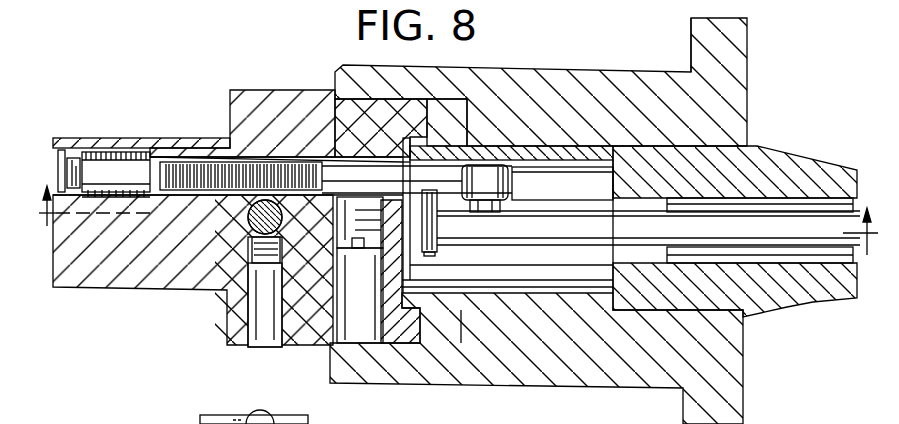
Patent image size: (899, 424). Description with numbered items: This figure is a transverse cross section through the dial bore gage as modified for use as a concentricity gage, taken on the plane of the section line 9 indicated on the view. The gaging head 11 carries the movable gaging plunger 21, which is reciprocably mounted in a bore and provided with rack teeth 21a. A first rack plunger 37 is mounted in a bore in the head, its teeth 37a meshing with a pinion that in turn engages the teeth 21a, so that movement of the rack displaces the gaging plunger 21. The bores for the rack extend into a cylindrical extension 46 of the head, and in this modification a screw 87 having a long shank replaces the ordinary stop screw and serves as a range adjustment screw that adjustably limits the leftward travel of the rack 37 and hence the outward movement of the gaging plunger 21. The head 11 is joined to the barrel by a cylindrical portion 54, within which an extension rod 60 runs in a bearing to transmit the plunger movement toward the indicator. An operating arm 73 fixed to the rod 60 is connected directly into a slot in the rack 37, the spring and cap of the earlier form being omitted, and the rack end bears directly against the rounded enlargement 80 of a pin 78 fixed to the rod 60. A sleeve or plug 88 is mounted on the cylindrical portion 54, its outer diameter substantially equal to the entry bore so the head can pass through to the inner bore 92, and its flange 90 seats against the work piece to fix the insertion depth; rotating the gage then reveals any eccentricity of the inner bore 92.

The sleeve or plug 88 is at (571, 66).
The flange 90 is at (735, 47).
The cylindrical portion 54 is at (753, 163).
The rounded enlargement 80 is at (507, 215).
The pin 78 is at (498, 158).
The first rack plunger 37 is at (340, 173).
The rack teeth 37a is at (213, 173).
The range adjustment screw 87 is at (102, 172).
The operating arm 73 is at (433, 258).
The extension rod 60 is at (795, 237).
The gaging plunger 21 is at (248, 228).
The rack teeth 21a is at (360, 270).
The cylindrical extension 46 is at (123, 270).
The gaging head 11 is at (556, 392).
The inner bore 92 is at (229, 394).
The section line 9- 9 is at (456, 234).